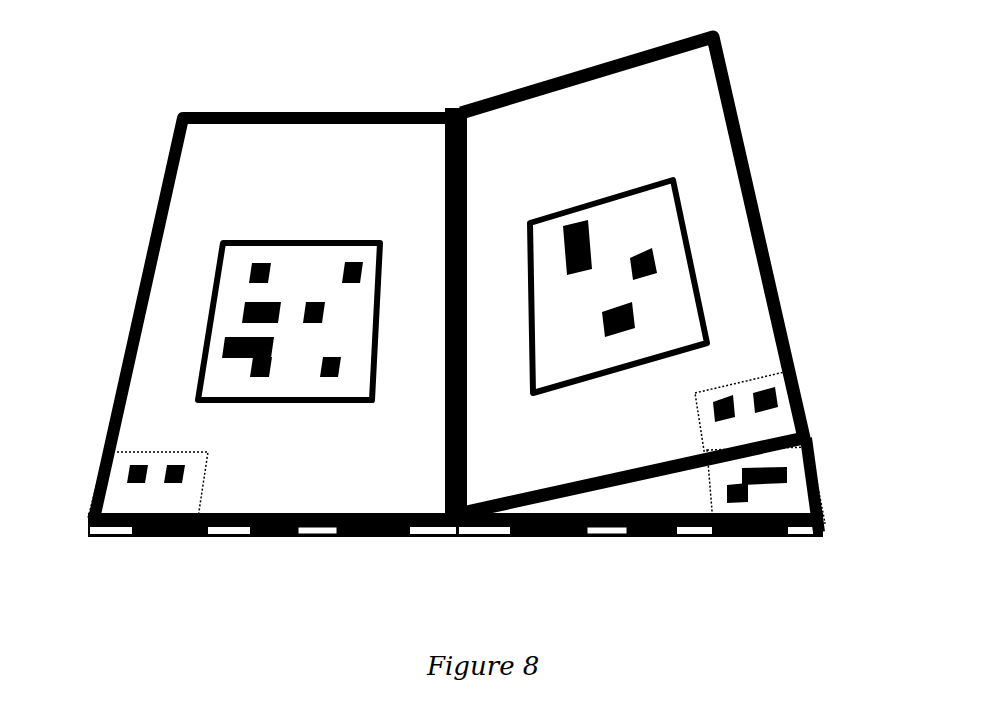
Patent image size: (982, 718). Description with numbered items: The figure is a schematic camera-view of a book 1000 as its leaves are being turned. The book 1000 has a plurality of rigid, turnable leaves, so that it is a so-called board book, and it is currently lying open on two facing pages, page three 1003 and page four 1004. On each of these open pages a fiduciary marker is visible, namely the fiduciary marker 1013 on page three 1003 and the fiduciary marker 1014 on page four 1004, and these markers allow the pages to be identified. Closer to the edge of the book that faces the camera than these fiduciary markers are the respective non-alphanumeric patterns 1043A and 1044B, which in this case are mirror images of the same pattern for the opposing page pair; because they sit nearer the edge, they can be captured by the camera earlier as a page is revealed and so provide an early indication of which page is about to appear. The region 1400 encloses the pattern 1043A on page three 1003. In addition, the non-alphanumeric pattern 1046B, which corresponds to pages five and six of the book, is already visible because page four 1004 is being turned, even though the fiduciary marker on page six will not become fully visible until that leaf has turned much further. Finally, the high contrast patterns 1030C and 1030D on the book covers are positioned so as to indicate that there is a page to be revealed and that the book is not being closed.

The book 1000 is at (268, 618).
The page 3 1003 is at (280, 313).
The page 4 1004 is at (632, 275).
The fiduciary marker 1013 is at (203, 289).
The fiduciary marker 1014 is at (700, 234).
The high contrast pattern 1030C is at (308, 538).
The high contrast pattern 1030D is at (605, 538).
The non-alphanumeric pattern 1043A is at (118, 471).
The sensing region 1400 is at (215, 465).
The non-alphanumeric pattern 1044B is at (783, 409).
The non-alphanumeric pattern 1046B is at (786, 494).